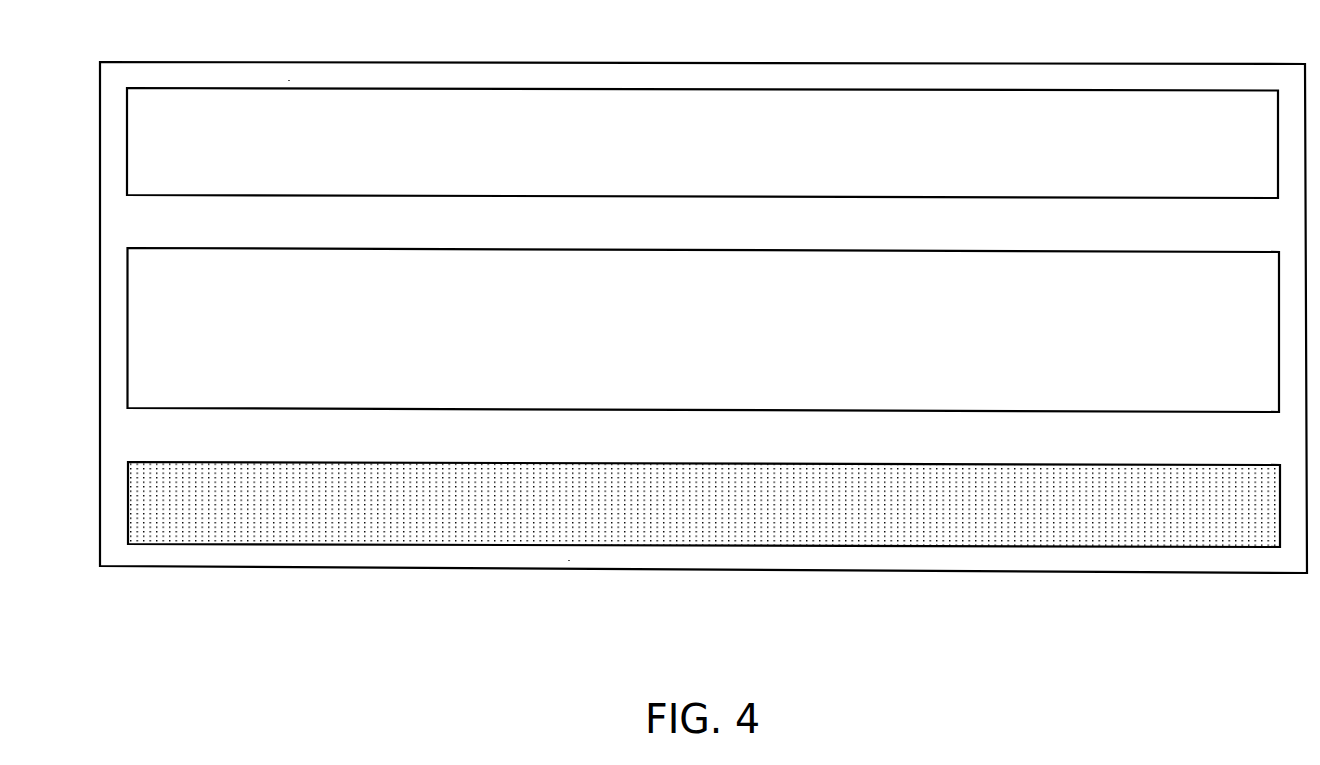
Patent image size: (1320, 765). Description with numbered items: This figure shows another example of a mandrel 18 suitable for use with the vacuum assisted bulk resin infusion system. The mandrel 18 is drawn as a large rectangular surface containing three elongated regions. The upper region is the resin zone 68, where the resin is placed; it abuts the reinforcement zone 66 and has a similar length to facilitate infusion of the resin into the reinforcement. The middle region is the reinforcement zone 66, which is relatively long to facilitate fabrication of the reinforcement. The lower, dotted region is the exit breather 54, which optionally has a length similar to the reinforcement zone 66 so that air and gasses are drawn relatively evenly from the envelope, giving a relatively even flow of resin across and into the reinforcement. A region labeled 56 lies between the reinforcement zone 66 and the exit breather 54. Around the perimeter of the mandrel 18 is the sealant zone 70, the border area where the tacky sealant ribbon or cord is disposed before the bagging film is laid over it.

The mandrel 18 is at (965, 63).
The exit breather 54 is at (342, 544).
The region between layers 56 is at (713, 448).
The reinforcement zone 66 is at (713, 340).
The resin zone 68 is at (713, 154).
The sealant zone 70 is at (290, 74).